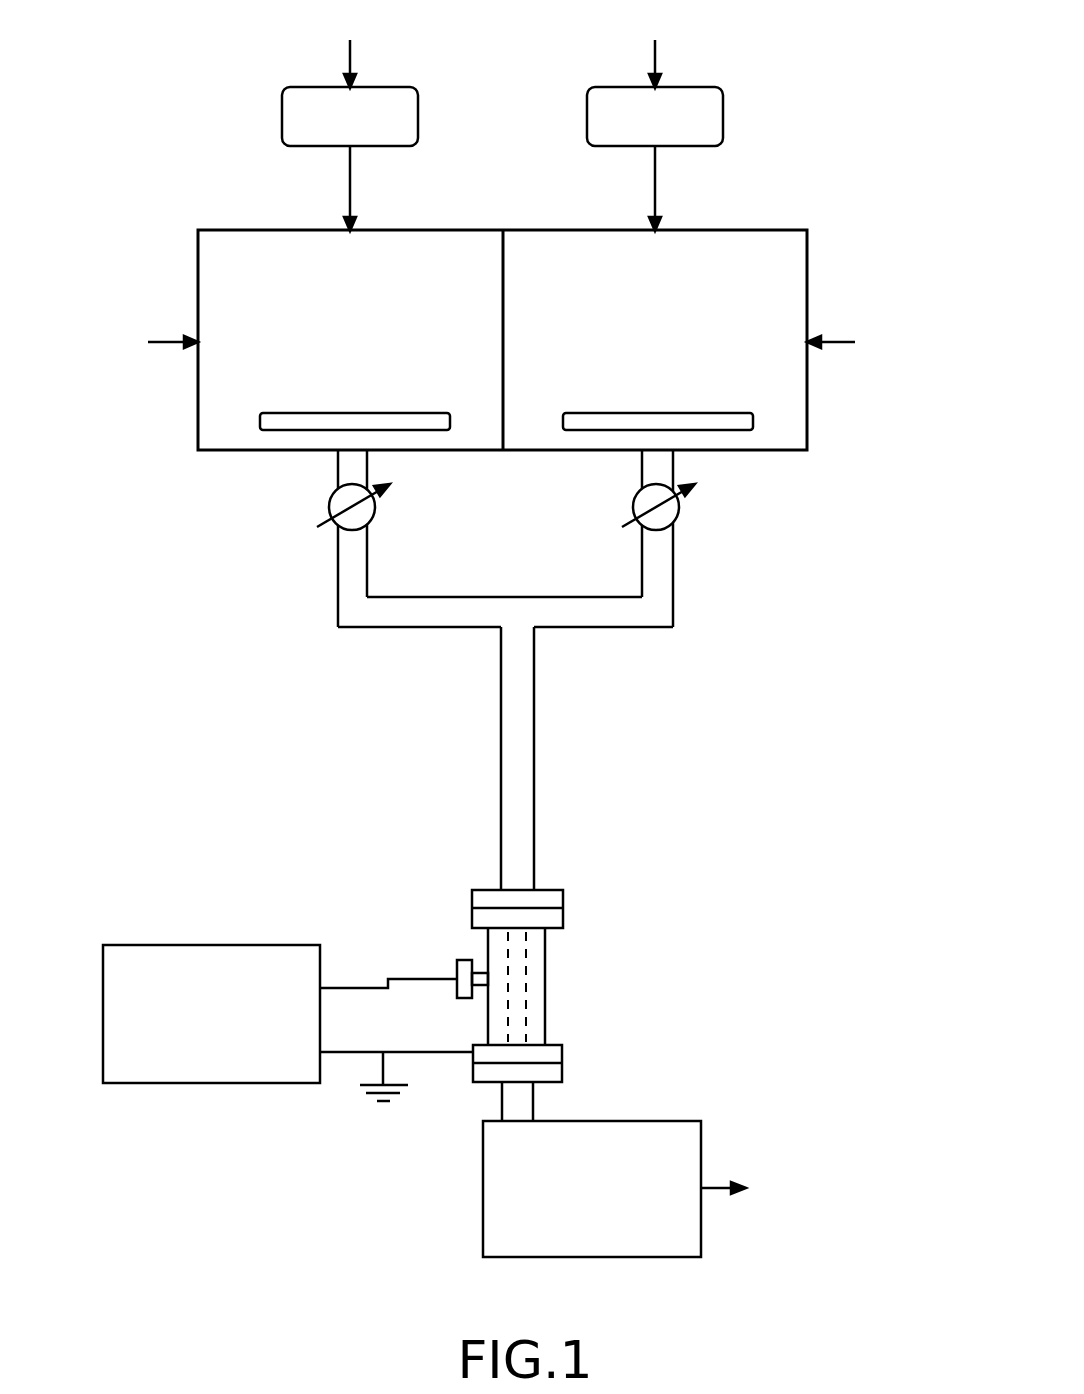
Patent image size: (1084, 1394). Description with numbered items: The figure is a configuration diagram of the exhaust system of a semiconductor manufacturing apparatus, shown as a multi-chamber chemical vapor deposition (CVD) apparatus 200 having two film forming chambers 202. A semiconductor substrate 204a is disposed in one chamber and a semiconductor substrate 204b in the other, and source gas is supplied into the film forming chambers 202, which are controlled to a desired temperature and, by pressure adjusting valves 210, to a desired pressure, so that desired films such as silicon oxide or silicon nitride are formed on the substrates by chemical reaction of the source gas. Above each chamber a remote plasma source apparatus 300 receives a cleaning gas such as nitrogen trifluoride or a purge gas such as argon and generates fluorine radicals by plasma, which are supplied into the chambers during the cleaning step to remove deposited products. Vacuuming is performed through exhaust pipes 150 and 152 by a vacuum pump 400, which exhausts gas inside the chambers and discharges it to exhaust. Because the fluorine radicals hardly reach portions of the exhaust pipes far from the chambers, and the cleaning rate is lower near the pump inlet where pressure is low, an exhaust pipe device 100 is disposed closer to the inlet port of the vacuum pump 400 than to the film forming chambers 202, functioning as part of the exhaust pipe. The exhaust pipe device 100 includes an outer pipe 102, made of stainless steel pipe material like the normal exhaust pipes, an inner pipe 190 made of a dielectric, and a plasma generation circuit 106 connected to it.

The exhaust pipe device 100 is at (393, 995).
The outer pipe 102 is at (547, 1027).
The plasma generation circuit 106 is at (258, 945).
The exhaust pipe 150 is at (541, 670).
The exhaust pipe 152 is at (536, 1106).
The inner pipe 190 is at (528, 1010).
The CVD apparatus 200 is at (501, 321).
The film forming chamber 202 is at (767, 230).
The semiconductor substrate 204a is at (323, 412).
The semiconductor substrate 204b is at (667, 412).
The pressure adjusting valve 210 is at (690, 500).
The remote plasma source apparatus 300 is at (760, 78).
The vacuum pump 400 is at (656, 1119).